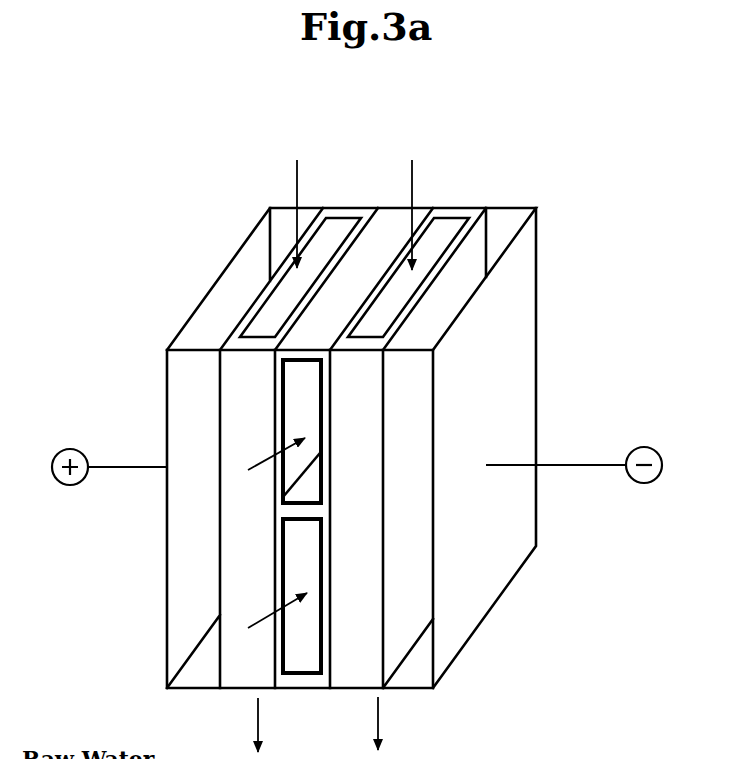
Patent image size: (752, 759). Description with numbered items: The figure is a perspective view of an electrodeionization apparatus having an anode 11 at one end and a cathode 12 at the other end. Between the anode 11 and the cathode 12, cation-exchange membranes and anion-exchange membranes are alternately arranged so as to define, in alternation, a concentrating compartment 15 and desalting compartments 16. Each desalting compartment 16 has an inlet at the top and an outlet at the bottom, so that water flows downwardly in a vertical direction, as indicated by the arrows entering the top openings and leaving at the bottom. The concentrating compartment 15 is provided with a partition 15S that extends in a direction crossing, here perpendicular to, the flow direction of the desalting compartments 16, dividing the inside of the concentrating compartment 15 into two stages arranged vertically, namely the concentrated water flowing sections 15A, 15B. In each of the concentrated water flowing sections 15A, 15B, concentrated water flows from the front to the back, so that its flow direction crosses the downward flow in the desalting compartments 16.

The anode 11 is at (165, 377).
The cathode 12 is at (512, 513).
The concentrating compartment 15 is at (310, 665).
The concentrated water flowing section 15A is at (308, 407).
The concentrated water flowing section 15B is at (297, 562).
The partition 15S is at (310, 492).
The desalting compartment 16 is at (335, 228).